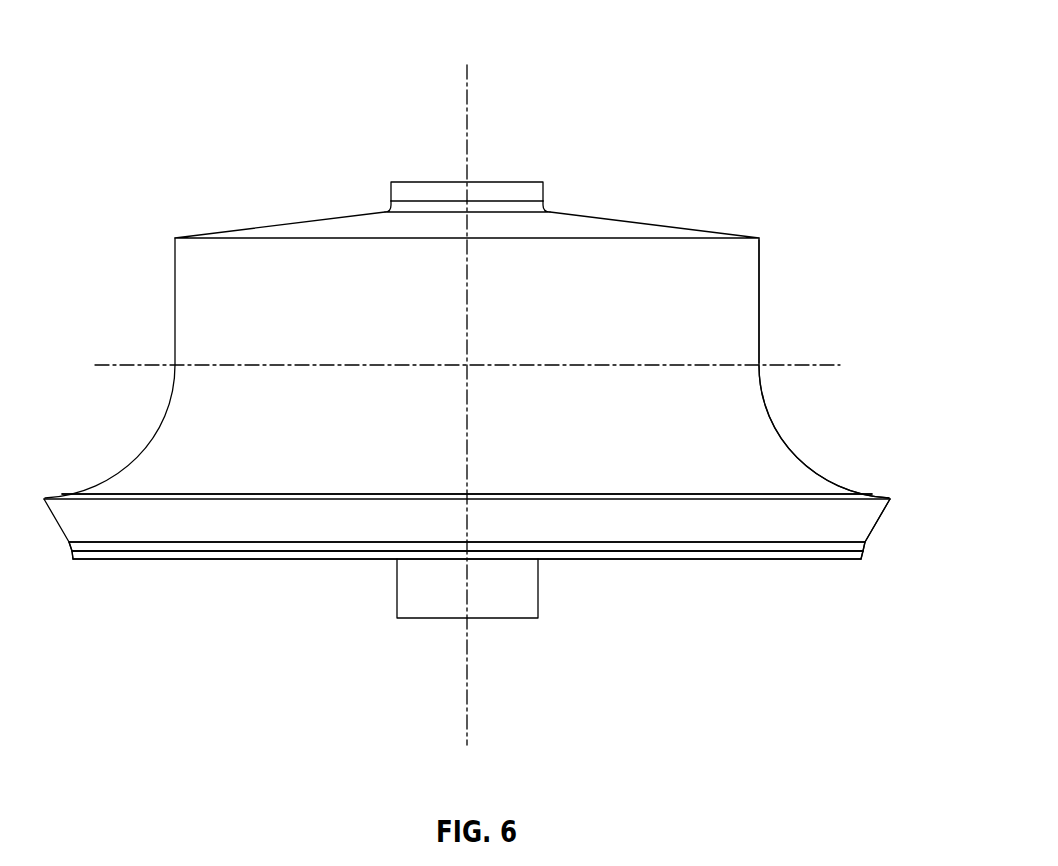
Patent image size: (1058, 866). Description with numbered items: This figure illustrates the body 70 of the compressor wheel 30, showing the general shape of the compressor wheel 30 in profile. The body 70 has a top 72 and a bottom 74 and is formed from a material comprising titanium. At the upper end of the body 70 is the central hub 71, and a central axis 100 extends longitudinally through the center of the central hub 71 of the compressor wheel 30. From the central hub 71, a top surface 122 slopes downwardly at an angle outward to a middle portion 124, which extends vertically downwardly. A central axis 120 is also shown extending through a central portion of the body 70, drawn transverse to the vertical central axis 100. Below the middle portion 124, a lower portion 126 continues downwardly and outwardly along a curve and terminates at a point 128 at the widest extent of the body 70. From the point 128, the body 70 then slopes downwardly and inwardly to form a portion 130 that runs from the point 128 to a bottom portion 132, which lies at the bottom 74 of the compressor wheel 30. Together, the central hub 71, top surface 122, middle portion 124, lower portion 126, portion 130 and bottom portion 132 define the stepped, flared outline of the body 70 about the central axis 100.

The compressor wheel 30 is at (602, 118).
The body 70 is at (497, 181).
The central hub 71 is at (448, 193).
The top 72 is at (388, 195).
The bottom 74 is at (268, 561).
The central axis 100 is at (468, 93).
The central axis 120 is at (785, 364).
The top surface 122 is at (650, 223).
The middle portion 124 is at (760, 283).
The lower portion 126 is at (775, 420).
The point 128 is at (890, 499).
The portion 130 is at (868, 537).
The bottom portion 132 is at (842, 561).